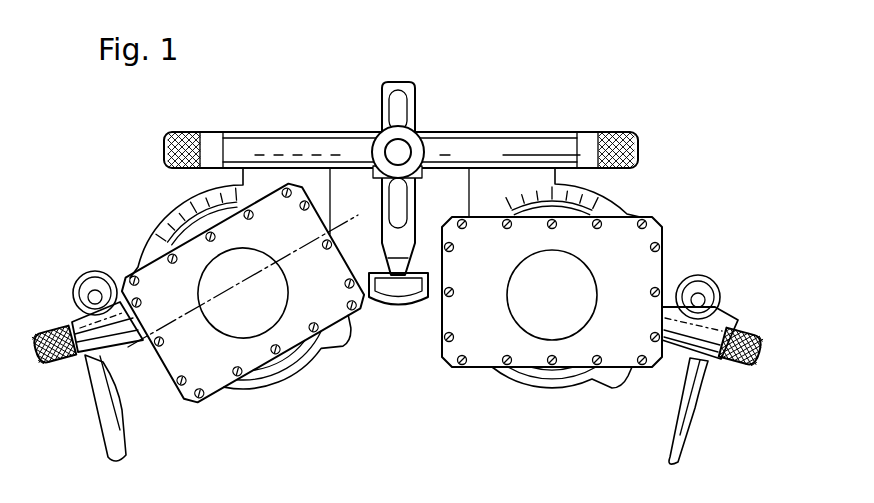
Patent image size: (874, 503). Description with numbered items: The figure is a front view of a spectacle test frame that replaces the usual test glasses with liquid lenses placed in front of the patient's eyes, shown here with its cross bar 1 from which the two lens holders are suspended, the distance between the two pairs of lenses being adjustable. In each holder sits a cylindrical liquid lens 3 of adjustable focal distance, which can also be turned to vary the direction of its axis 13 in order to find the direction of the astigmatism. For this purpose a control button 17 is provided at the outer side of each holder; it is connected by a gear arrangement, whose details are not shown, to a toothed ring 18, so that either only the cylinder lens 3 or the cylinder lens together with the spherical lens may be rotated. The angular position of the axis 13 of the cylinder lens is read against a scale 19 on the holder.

The cross bar 1 is at (540, 140).
The cylindrical liquid lens 3 is at (258, 302).
The axis of the cylinder 13 is at (130, 357).
The control button 17 is at (53, 325).
The toothed ring 18 is at (252, 380).
The scale 19 is at (165, 218).